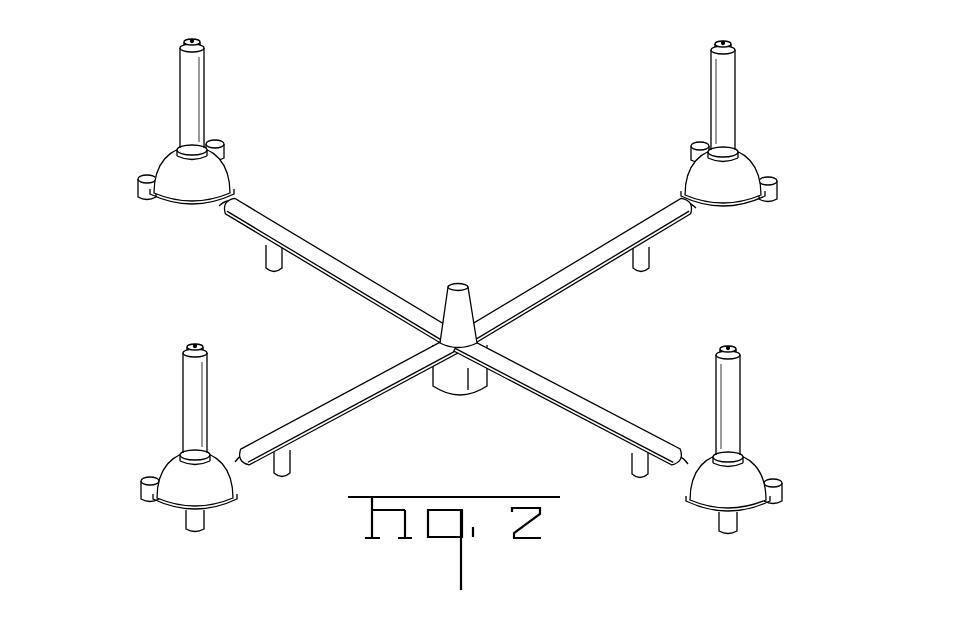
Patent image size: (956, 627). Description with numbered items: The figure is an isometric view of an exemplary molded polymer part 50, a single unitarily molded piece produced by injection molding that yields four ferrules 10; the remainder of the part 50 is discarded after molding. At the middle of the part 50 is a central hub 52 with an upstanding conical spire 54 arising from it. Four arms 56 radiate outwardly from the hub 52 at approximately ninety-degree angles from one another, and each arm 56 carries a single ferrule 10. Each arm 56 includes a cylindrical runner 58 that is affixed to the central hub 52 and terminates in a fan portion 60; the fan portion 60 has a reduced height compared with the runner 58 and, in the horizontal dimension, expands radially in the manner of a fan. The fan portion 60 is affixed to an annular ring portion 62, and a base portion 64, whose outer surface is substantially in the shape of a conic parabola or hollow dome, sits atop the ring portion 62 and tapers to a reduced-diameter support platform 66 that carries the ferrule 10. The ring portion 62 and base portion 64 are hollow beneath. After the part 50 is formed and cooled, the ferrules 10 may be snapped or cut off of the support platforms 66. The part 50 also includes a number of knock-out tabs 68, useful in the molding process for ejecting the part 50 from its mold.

The ferrule 10 is at (187, 70).
The polymer part 50 is at (446, 108).
The central hub 52 is at (474, 398).
The conical spire 54 is at (470, 285).
The arm 56 is at (372, 309).
The cylindrical runner 58 is at (290, 240).
The fan portion 60 is at (228, 192).
The annular ring portion 62 is at (178, 208).
The base portion 64 is at (757, 162).
The support platform 66 is at (180, 148).
The knock-out tab 68 is at (210, 140).